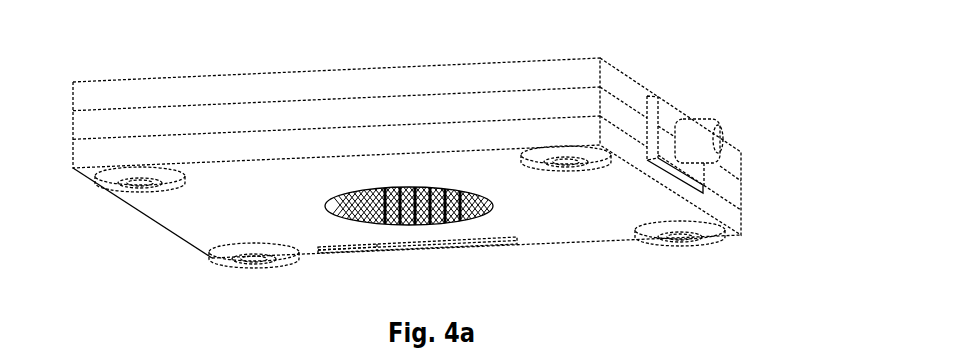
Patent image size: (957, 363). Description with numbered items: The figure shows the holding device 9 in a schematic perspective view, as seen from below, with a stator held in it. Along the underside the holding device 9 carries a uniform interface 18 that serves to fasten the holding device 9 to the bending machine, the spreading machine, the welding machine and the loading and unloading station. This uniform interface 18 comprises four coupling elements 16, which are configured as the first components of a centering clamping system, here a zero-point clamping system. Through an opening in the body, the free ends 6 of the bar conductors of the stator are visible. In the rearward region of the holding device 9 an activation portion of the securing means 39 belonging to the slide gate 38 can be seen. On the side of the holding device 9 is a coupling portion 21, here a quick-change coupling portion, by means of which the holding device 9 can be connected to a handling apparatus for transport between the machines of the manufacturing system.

The holding device 9 is at (121, 73).
The coupling elements 16 is at (110, 185).
The uniform interface 18 is at (188, 315).
The free ends 6 is at (352, 216).
The coupling portion 21 is at (703, 137).
The slide gate 38 is at (342, 257).
The securing means 39 is at (358, 250).